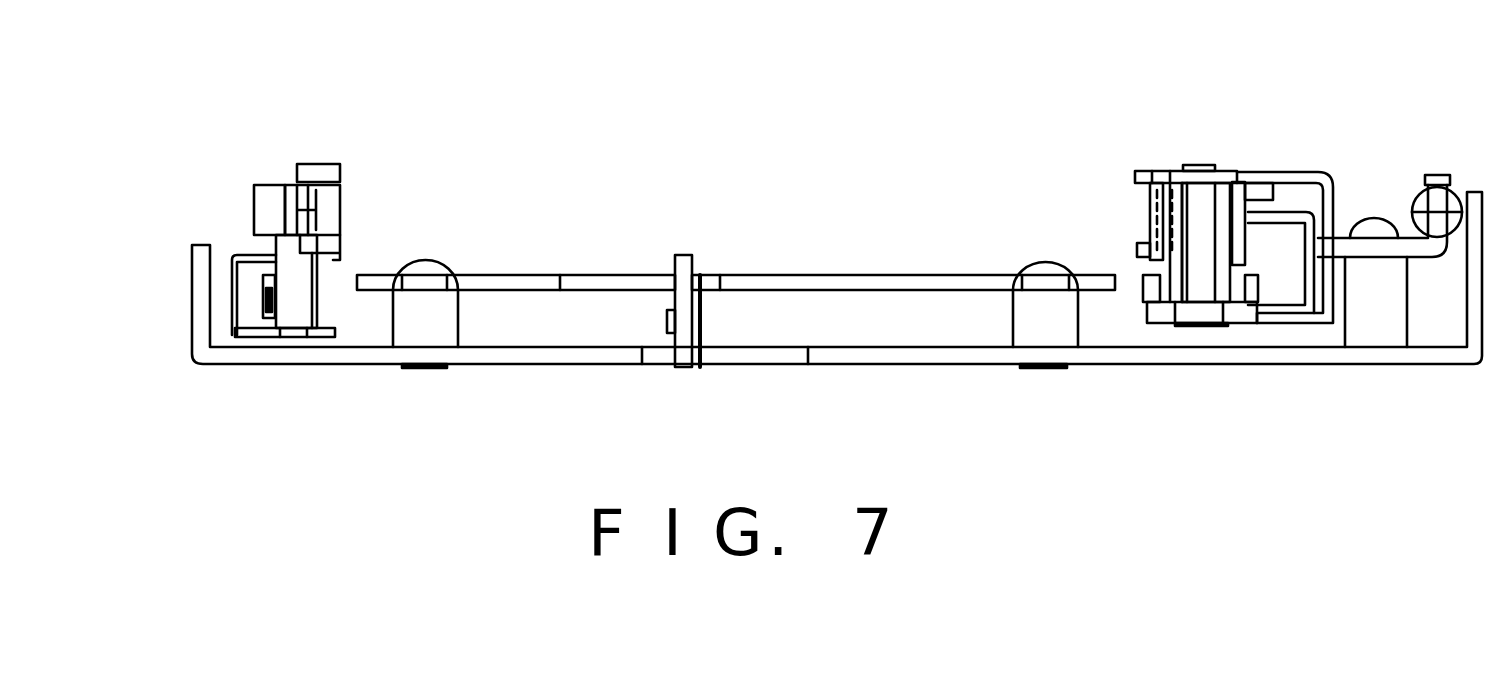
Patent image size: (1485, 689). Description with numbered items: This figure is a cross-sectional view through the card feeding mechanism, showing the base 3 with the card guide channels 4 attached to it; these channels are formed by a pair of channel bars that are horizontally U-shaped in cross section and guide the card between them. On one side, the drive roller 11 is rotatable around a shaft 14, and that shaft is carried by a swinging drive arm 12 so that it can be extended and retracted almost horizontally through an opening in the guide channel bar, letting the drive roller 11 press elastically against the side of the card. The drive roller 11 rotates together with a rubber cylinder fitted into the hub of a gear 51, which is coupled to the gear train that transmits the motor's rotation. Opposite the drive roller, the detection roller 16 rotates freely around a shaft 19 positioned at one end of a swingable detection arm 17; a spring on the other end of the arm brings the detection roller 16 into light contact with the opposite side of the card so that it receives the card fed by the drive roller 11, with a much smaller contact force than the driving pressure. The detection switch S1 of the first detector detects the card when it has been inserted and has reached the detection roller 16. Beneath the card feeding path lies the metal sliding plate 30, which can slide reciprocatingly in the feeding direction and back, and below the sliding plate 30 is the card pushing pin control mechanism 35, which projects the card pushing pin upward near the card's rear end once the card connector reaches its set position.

The base 3 is at (275, 364).
The card guide channels 4 is at (327, 163).
The drive roller 11 is at (1260, 170).
The drive arm 12 is at (1280, 322).
The shaft 14 is at (1200, 162).
The detection roller 16 is at (254, 192).
The detection arm 17 is at (250, 253).
The shaft 19 is at (290, 184).
The sliding plate 30 is at (502, 276).
The card pushing pin control mechanism 35 is at (705, 307).
The gear 51 is at (1138, 290).
The detection switch S1 is at (265, 300).